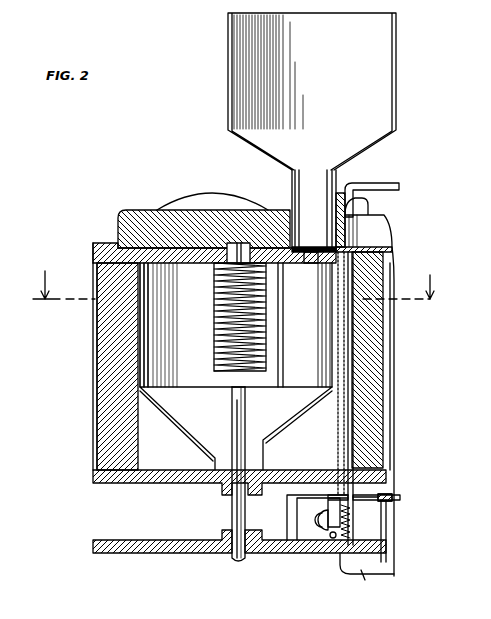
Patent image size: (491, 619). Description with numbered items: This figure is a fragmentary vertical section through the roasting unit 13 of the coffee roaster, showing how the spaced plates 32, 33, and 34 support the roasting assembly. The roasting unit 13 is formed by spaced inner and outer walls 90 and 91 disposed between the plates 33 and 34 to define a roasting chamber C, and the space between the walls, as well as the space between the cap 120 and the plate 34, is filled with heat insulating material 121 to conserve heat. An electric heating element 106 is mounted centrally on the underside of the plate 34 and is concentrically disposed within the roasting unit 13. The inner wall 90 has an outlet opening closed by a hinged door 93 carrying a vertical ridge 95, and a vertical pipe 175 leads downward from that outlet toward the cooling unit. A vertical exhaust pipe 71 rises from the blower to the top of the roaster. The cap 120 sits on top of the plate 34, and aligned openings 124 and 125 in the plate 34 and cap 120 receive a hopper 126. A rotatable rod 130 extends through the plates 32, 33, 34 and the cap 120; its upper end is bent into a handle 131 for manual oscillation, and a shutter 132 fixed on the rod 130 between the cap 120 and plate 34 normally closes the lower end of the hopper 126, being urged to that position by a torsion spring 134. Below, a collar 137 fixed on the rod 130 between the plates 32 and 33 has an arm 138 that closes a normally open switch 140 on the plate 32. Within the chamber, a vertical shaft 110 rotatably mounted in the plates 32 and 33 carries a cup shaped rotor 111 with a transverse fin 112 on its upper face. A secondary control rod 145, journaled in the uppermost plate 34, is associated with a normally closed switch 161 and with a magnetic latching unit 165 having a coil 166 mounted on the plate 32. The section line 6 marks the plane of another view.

The hopper 126 is at (397, 60).
The opening in cap 125 is at (293, 196).
The handle 131 is at (396, 183).
The heat insulating material 121 is at (143, 225).
The cap 120 is at (216, 205).
The vertical exhaust pipe 71 is at (232, 196).
The roasting chamber C is at (163, 284).
The plate 34 is at (93, 256).
The shutter 132 is at (312, 247).
The opening in plate 124 is at (296, 263).
The section line 6- 6 is at (234, 289).
The roasting unit 13 is at (85, 373).
The outer wall 91 is at (96, 320).
The inner wall 90 is at (140, 338).
The electric heating element 106 is at (215, 325).
The ridge 95 is at (283, 322).
The door 93 is at (385, 318).
The rotatable rod 130 is at (362, 407).
The cup shaped rotor 111 is at (292, 388).
The transverse fin 112 is at (234, 400).
The vertical shaft 110 is at (232, 508).
The plate 33 is at (93, 477).
The plate 32 is at (93, 547).
The switch 140 is at (295, 502).
The magnetic latching unit 165 is at (298, 521).
The coil 166 is at (328, 530).
The torsion spring 134 is at (342, 533).
The arm 138 is at (332, 495).
The switch 161 is at (414, 494).
The collar 137 is at (355, 506).
The secondary control rod 145 is at (388, 524).
The vertical pipe 175 is at (367, 575).